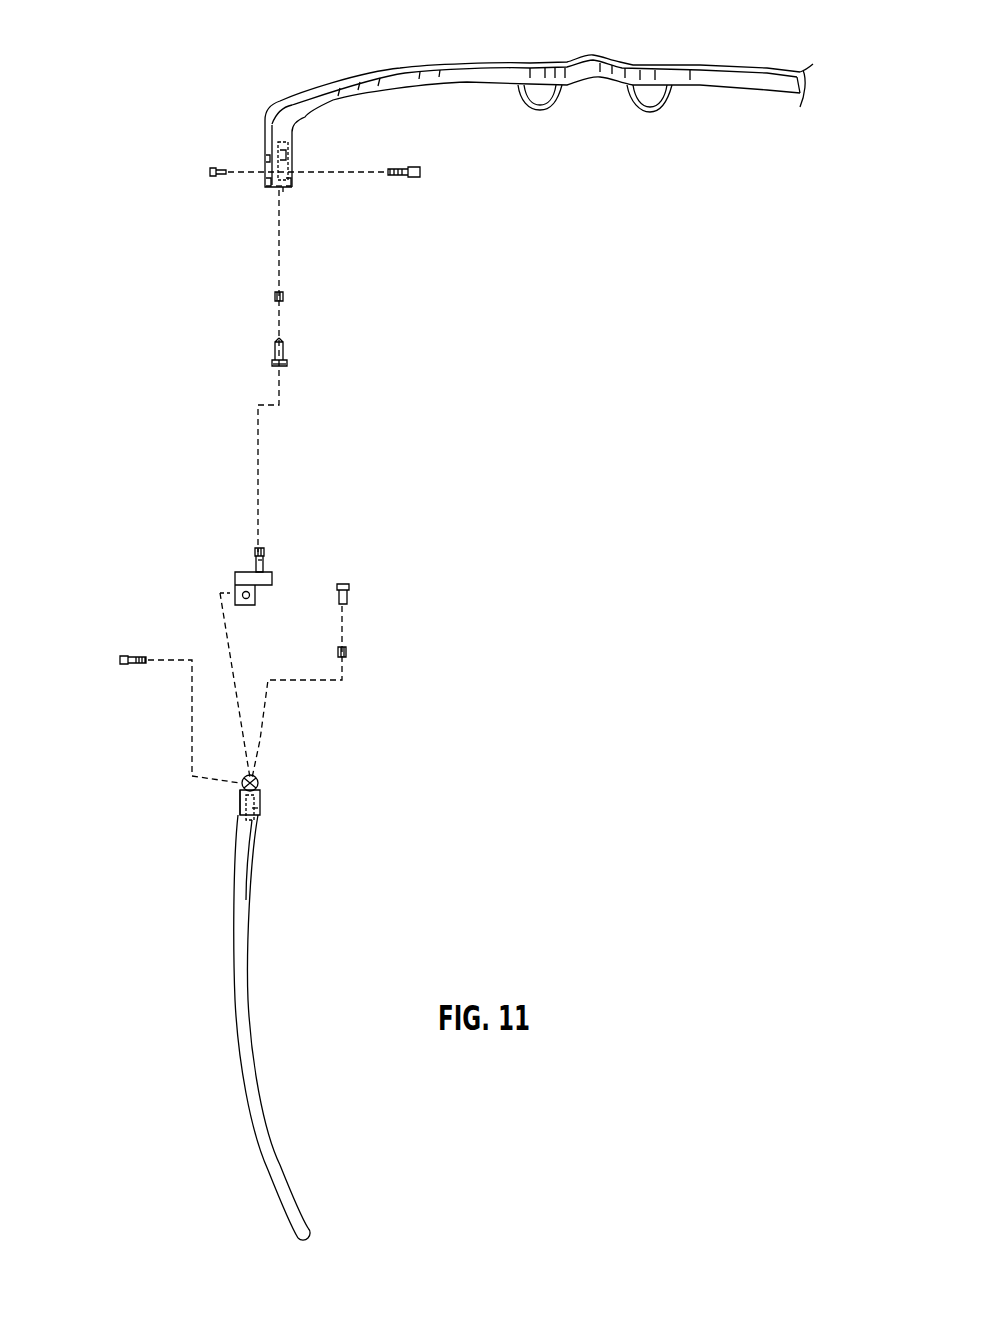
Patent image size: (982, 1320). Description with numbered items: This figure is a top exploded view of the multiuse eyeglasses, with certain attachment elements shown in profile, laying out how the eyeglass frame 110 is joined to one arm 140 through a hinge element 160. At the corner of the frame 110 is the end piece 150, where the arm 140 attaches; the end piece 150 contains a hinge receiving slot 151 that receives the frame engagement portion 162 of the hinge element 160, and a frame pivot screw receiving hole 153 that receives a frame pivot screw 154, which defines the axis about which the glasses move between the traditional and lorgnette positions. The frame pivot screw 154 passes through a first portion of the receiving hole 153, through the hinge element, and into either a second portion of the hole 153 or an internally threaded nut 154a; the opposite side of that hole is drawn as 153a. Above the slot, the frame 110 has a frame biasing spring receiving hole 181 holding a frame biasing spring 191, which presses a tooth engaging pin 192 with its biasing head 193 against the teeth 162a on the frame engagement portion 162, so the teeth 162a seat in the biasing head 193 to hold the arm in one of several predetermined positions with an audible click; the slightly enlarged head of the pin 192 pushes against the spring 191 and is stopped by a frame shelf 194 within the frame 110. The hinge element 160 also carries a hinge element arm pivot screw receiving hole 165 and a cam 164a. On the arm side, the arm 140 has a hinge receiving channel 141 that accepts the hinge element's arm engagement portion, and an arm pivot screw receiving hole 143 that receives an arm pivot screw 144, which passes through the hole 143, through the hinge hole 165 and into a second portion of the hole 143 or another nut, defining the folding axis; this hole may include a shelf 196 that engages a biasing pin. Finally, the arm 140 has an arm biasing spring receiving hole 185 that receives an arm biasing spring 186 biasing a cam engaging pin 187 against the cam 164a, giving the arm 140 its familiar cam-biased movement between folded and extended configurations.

The eyeglass frame 110 is at (795, 68).
The end piece 150 is at (273, 125).
The frame biasing spring receiving hole 181 is at (273, 142).
The frame shelf 194 is at (283, 163).
The frame pivot screw receiving hole 153 is at (292, 184).
The hinge aperture 153a is at (268, 188).
The hinge receiving slot 151 is at (287, 188).
The frame pivot screw 154 is at (423, 174).
The internally threaded nut 154a is at (218, 168).
The frame biasing spring 191 is at (285, 298).
The tooth engaging pin 192 is at (286, 356).
The biasing head 193 is at (284, 364).
The hinge element 160 is at (236, 580).
The frame engagement portion 162 is at (256, 560).
The teeth 162a is at (263, 557).
The cam 164a is at (257, 598).
The hinge element arm pivot screw receiving hole 165 is at (246, 598).
The cam engaging pin 187 is at (350, 596).
The arm biasing spring 186 is at (347, 652).
The arm pivot screw 144 is at (140, 668).
The arm pivot screw receiving hole 143 is at (258, 780).
The hinge receiving channel 141 is at (242, 792).
The shelf 196 is at (244, 805).
The arm biasing spring receiving hole 185 is at (260, 810).
The arm 140 is at (246, 1062).